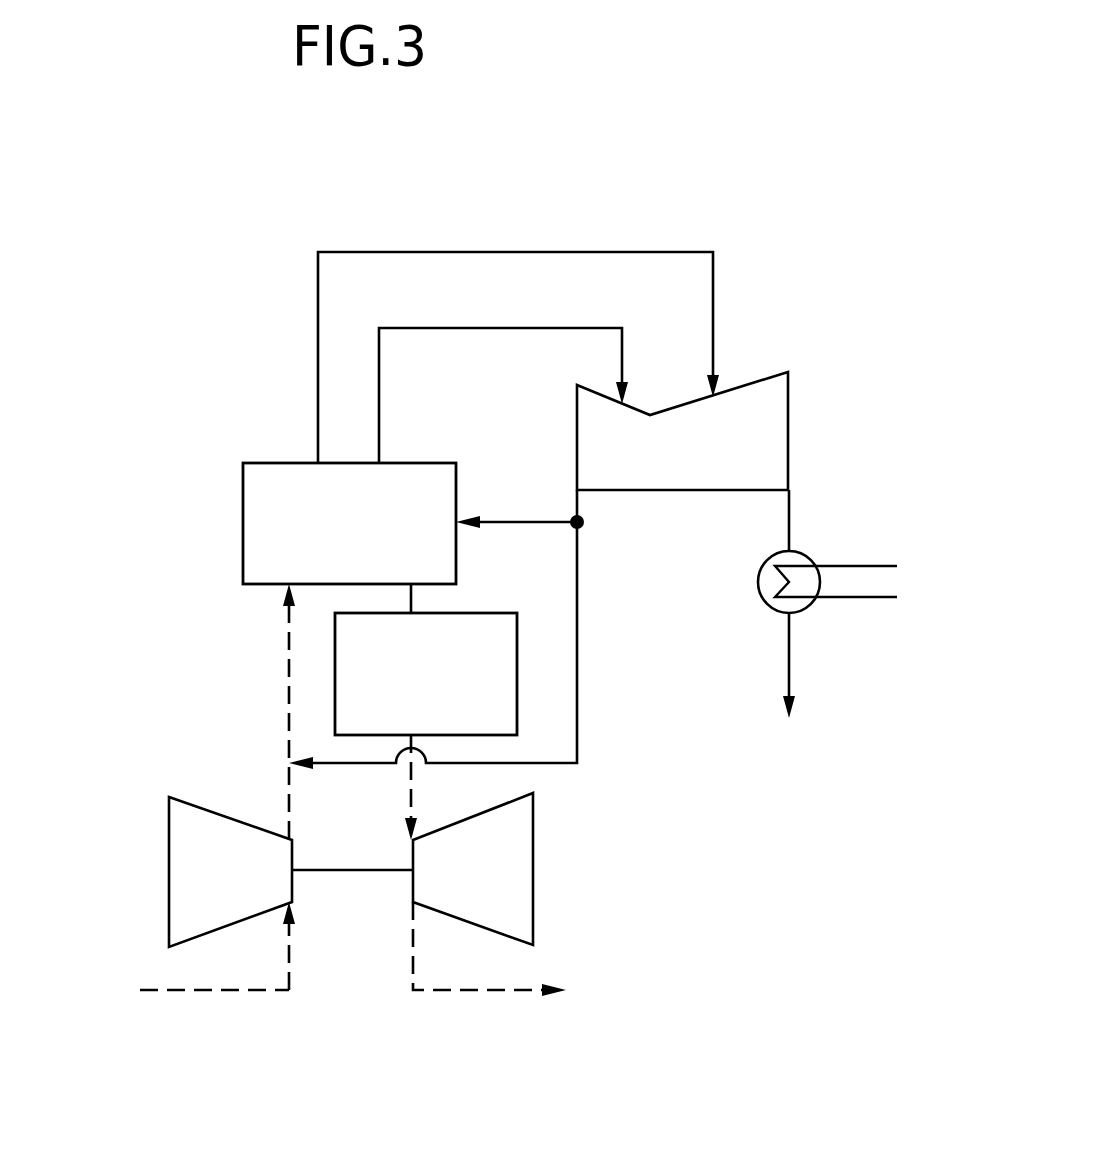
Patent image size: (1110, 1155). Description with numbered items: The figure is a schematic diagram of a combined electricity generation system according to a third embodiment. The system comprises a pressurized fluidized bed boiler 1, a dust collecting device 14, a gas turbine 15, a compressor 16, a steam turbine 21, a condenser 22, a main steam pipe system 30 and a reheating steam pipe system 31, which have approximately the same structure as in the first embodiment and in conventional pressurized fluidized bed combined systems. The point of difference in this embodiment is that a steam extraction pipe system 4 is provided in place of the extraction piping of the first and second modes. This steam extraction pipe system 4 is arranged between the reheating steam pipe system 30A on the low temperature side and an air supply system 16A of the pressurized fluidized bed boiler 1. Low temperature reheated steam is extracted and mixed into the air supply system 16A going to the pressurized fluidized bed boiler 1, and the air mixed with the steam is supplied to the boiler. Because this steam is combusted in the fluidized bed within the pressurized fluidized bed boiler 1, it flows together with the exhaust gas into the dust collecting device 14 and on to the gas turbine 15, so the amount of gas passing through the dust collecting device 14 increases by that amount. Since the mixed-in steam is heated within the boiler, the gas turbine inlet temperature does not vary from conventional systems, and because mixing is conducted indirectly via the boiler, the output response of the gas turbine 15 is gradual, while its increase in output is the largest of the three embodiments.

The pressurized fluidized bed boiler 1 is at (260, 463).
The steam extraction pipe system 4 is at (577, 745).
The dust collecting device 14 is at (498, 613).
The gas turbine 15 is at (533, 897).
The compressor 16 is at (169, 816).
The air supply system 16A is at (289, 690).
The steam turbine 21 is at (770, 373).
The condenser 22 is at (808, 552).
The main steam pipe system 30 is at (455, 328).
The reheating steam pipe system on the low temperature side 30A is at (584, 508).
The reheating steam pipe system 31 is at (370, 252).